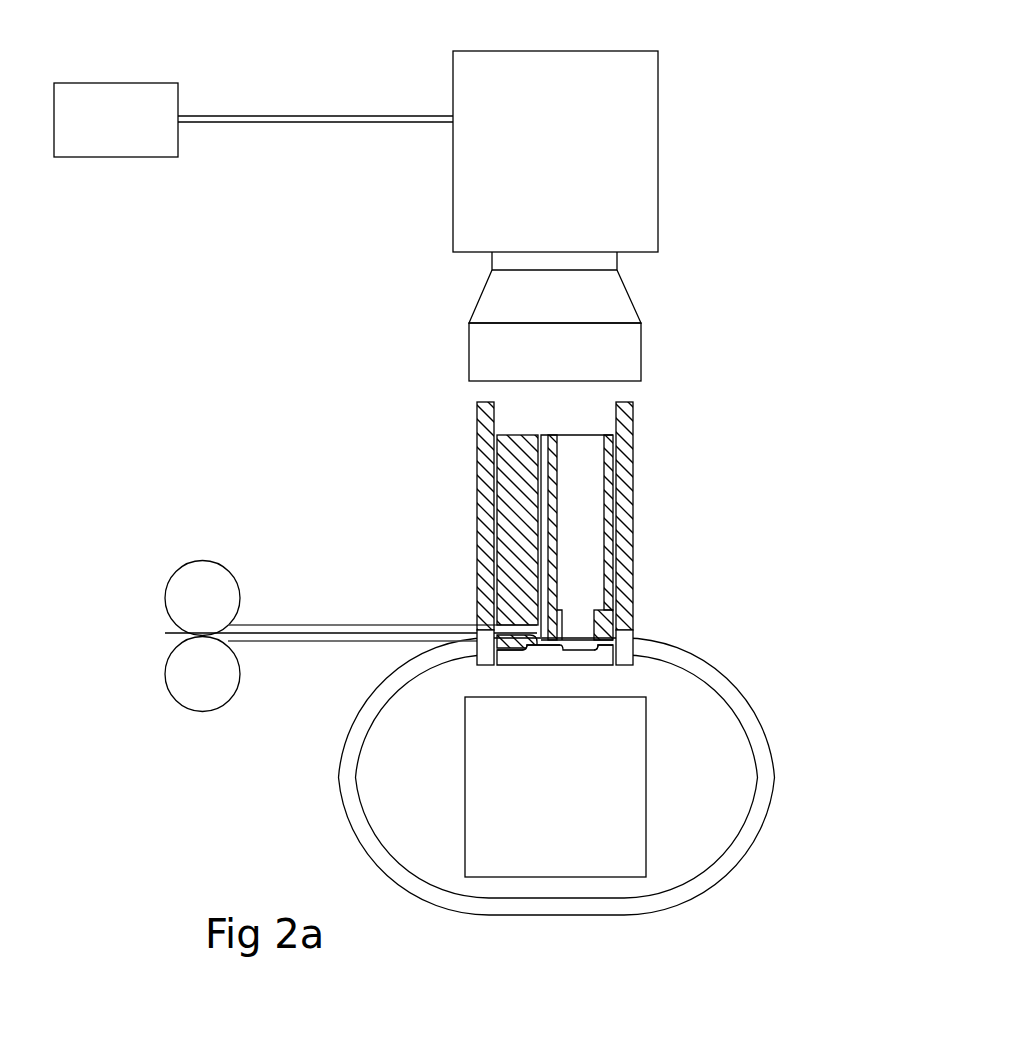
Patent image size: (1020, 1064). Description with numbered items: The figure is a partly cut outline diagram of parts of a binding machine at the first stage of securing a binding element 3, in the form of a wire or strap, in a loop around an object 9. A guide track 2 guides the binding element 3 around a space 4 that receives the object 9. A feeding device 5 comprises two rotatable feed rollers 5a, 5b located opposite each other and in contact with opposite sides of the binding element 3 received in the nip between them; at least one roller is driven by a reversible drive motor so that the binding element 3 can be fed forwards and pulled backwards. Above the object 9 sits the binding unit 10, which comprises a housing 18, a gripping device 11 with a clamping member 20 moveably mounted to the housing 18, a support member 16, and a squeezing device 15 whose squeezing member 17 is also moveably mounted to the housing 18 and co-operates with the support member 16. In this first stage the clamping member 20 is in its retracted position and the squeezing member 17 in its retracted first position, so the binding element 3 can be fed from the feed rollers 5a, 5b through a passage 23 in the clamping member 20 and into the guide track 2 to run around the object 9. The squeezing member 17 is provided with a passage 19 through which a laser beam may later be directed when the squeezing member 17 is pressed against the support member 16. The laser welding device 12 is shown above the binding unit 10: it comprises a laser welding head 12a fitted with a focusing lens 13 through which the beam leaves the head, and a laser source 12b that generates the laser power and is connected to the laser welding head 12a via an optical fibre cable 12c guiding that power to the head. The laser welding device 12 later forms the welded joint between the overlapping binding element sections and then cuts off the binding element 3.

The guide track 2 is at (725, 673).
The binding element 3 is at (300, 630).
The space 4 is at (683, 858).
The feeding device 5 is at (220, 637).
The feed roller 5a is at (193, 572).
The feed roller 5b is at (210, 703).
The object 9 is at (638, 785).
The binding unit 10 is at (730, 327).
The gripping device 11 is at (510, 652).
The laser welding device 12 is at (413, 204).
The laser welding head 12a is at (673, 232).
The laser source 12b is at (116, 151).
The optical fibre cable 12c is at (259, 120).
The focusing lens 13 is at (483, 346).
The squeezing device 15 is at (605, 645).
The support member 16 is at (560, 660).
The squeezing member 17 is at (605, 625).
The housing 18 is at (632, 483).
The passage 19 is at (587, 620).
The clamping member 20 is at (525, 645).
The passage 23 is at (517, 632).